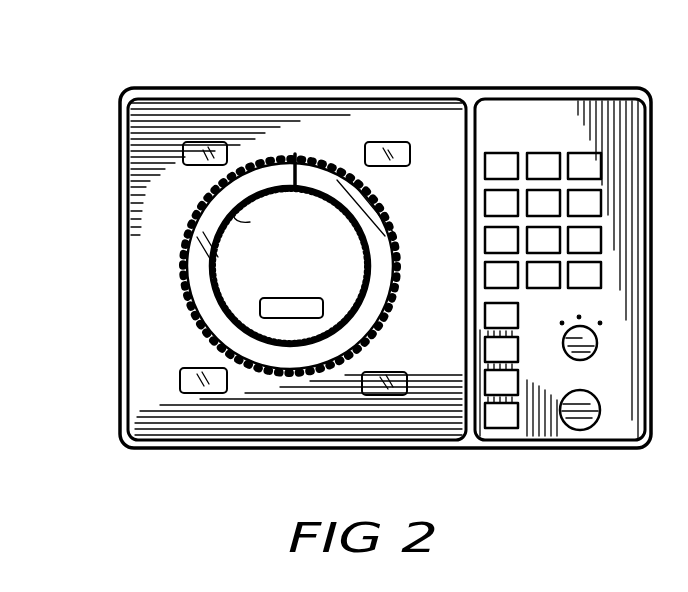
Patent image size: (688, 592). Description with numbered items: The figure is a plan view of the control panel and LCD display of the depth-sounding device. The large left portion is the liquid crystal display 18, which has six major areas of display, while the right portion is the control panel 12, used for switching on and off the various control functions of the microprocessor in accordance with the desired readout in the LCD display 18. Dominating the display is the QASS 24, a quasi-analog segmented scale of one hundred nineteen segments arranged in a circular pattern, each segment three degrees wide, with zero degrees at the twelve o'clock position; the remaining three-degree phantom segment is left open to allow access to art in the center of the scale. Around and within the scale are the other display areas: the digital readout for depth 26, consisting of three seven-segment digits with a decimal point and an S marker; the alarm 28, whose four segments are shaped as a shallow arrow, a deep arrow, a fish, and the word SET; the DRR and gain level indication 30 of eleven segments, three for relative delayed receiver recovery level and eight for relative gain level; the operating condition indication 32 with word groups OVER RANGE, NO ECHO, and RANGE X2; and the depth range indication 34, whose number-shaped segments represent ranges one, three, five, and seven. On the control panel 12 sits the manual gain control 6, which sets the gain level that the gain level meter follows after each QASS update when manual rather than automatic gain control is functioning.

The liquid crystal display 18 is at (160, 50).
The control panel 12 is at (549, 127).
The quasi-analog segmented scale 24 is at (313, 160).
The digital readout for depth 26 is at (388, 142).
The alarm 28 is at (208, 142).
The DRR and gain level indication 30 is at (217, 393).
The operating condition indication 32 is at (400, 395).
The depth range indication 34 is at (311, 272).
The manual gain control 6 is at (573, 431).